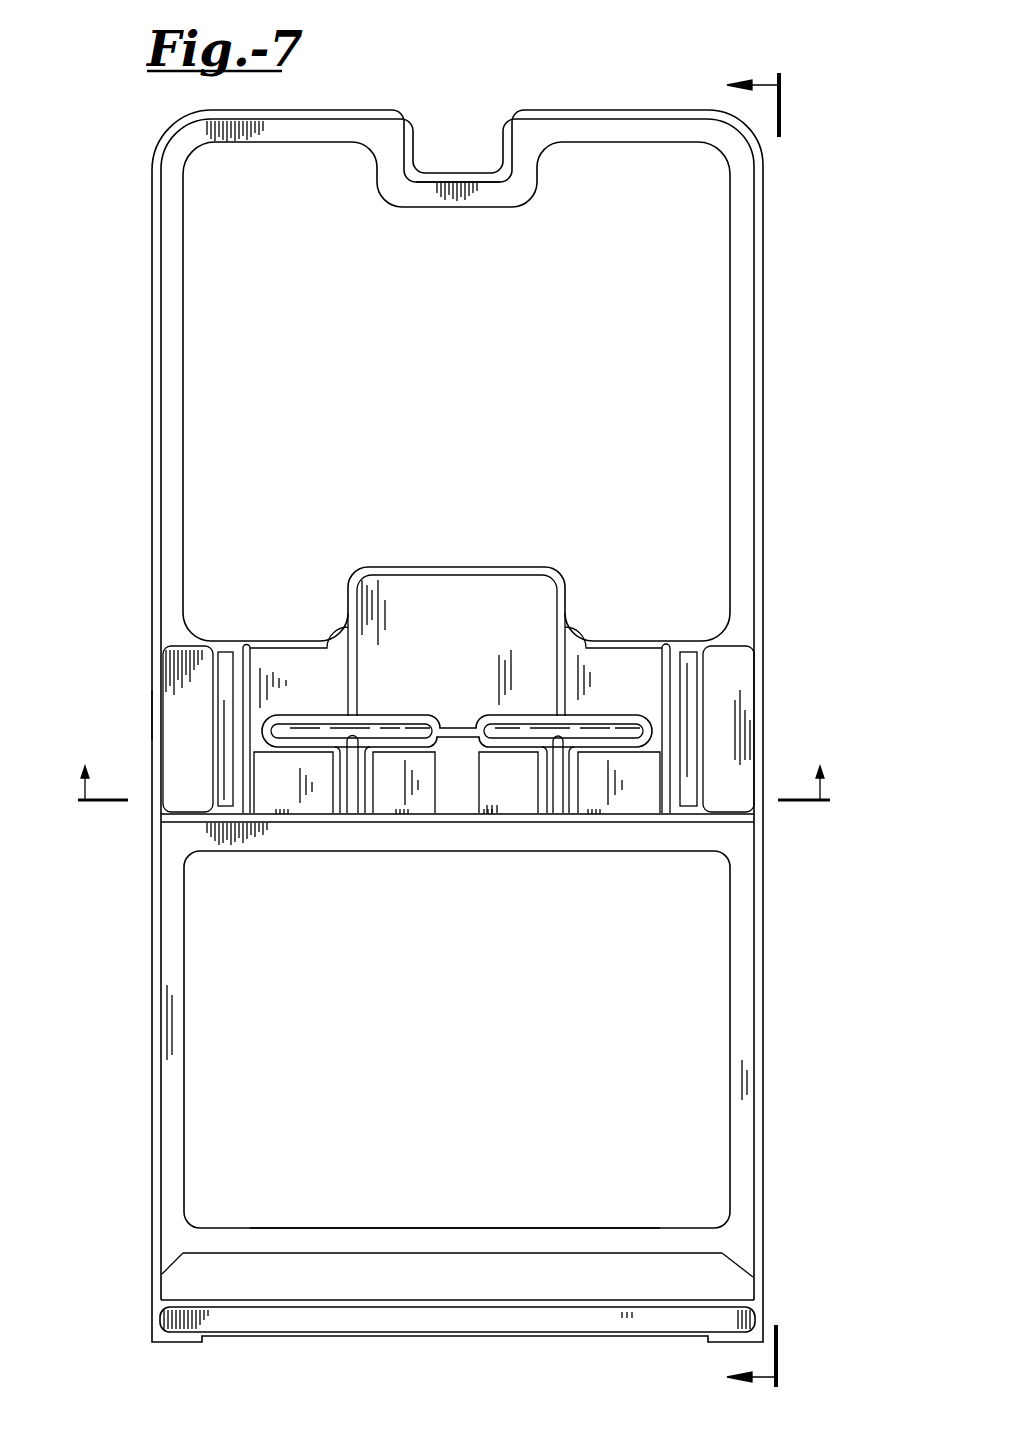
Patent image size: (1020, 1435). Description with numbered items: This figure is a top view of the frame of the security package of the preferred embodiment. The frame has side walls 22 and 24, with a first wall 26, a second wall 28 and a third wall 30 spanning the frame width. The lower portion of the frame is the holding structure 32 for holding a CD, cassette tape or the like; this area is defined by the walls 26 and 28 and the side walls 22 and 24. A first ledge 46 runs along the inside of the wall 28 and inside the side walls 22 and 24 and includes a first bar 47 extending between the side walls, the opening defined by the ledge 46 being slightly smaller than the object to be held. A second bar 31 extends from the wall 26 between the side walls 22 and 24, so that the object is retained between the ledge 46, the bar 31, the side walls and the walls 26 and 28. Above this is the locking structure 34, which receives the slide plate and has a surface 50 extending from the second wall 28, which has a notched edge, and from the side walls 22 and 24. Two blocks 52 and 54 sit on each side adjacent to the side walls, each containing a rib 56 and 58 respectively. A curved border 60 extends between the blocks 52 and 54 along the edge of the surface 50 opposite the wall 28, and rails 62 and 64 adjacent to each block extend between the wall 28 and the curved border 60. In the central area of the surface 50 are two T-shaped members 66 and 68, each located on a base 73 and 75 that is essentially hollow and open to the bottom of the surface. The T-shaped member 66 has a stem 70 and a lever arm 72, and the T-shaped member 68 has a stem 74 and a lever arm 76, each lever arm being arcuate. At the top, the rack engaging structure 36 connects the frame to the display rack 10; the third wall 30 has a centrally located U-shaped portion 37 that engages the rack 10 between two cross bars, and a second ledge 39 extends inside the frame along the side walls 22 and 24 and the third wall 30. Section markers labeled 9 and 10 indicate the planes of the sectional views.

The third wall 30 is at (252, 110).
The rack engaging structure 36 is at (527, 102).
The U-shaped portion 37 is at (487, 180).
The second ledge 39 is at (186, 318).
The rack 10 is at (734, 734).
The section line 9- 9 is at (453, 768).
The locking structure 34 is at (133, 712).
The holding structure 32 is at (134, 1247).
The curved border 60 is at (442, 566).
The surface 50 is at (417, 598).
The block 52 is at (168, 690).
The block 54 is at (741, 692).
The rib 56 is at (224, 656).
The rib 58 is at (689, 660).
The rail 62 is at (249, 655).
The rail 64 is at (665, 656).
The stem 70 is at (352, 778).
The lever arm 72 is at (386, 735).
The lever arm 76 is at (492, 730).
The T-shaped member 66 is at (351, 800).
The T-shaped member 68 is at (560, 800).
The stem 74 is at (556, 779).
The base 73 is at (332, 753).
The base 75 is at (537, 755).
The second wall 28 is at (735, 822).
The side wall 22 is at (165, 996).
The side wall 24 is at (767, 1010).
The first ledge 46 is at (733, 1092).
The first bar 47 is at (398, 1228).
The second bar 31 is at (487, 1300).
The first wall 26 is at (458, 1338).